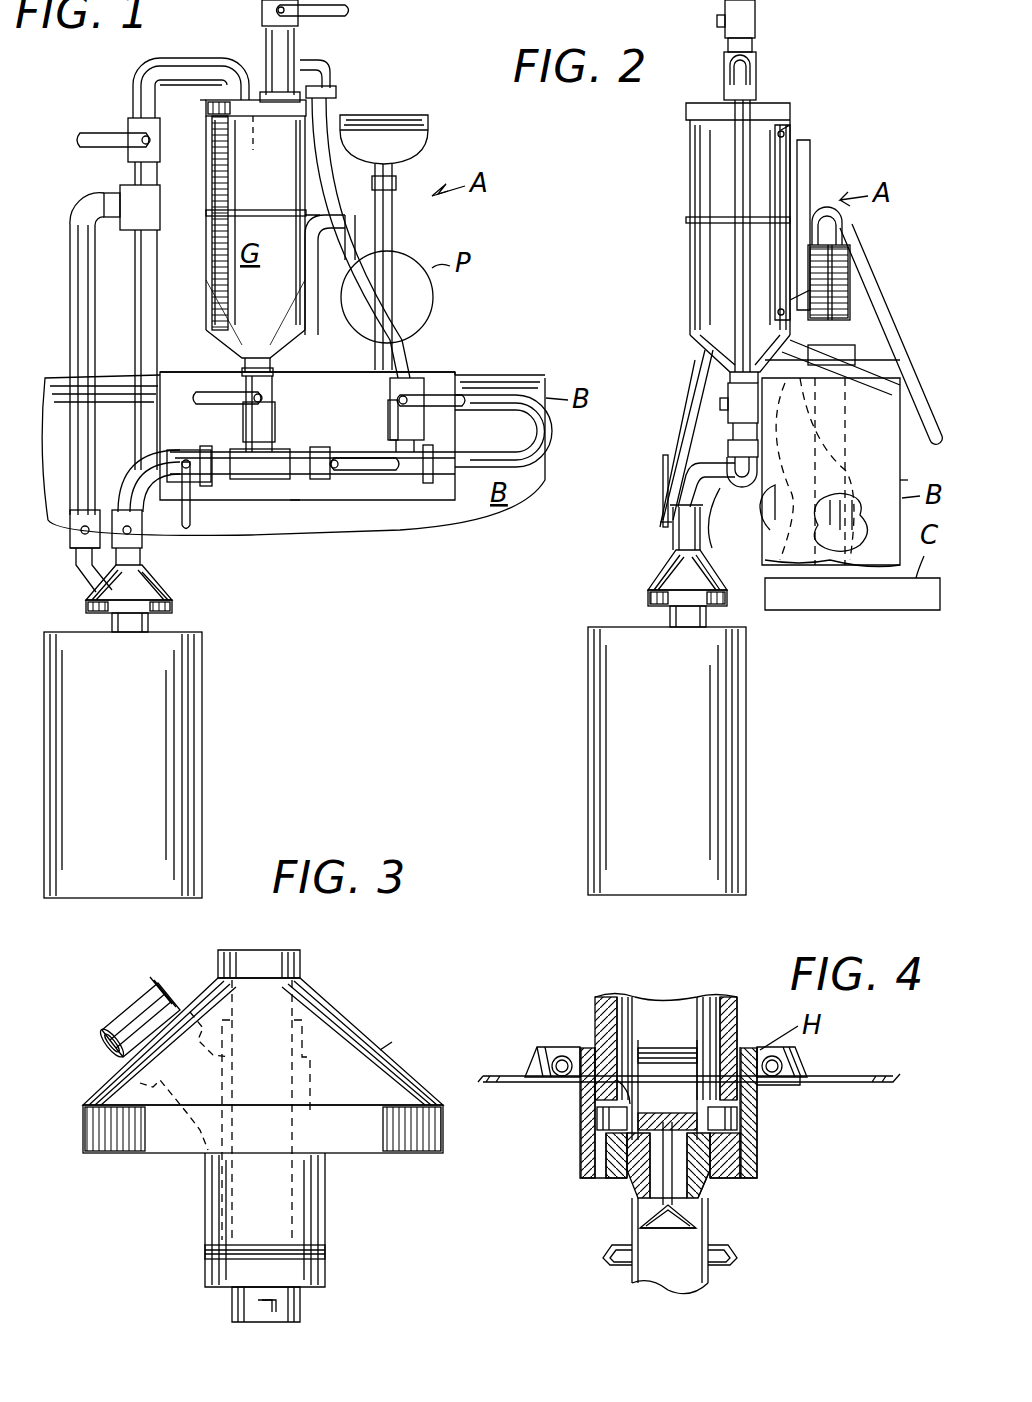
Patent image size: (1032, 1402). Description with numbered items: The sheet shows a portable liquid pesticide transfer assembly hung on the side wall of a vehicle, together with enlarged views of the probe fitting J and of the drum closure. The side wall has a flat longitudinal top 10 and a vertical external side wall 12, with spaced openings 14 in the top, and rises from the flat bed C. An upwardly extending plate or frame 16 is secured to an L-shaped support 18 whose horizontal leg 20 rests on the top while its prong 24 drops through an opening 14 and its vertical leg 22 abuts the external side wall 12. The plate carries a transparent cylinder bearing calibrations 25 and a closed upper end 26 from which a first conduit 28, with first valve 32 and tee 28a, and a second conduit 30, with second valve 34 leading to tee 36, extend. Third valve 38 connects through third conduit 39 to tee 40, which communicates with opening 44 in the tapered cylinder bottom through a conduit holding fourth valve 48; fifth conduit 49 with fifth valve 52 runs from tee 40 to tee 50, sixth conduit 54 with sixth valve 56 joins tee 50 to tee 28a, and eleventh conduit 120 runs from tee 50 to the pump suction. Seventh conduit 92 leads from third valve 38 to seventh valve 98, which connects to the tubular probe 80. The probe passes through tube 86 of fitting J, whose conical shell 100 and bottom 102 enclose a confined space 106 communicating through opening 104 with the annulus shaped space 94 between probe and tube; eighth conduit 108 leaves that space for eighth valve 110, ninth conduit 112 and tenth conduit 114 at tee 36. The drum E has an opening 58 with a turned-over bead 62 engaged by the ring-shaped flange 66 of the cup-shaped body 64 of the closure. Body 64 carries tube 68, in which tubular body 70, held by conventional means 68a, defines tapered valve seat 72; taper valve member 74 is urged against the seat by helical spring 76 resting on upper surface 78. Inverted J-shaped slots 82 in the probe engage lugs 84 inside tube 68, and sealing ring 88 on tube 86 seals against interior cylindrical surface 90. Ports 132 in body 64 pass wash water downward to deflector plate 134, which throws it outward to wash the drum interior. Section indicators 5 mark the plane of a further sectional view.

In FIG. 1, the section line 5 is at (192, 105).
In FIG. 1, the flat longitudinal top 10 is at (500, 374).
In FIG. 2, the flat longitudinal top 10 is at (880, 380).
In FIG. 2, the external side wall 12 is at (900, 472).
In FIG. 2, the openings 14 is at (846, 440).
In FIG. 1, the plate or frame 16 is at (307, 369).
In FIG. 2, the plate or frame 16 is at (810, 182).
In FIG. 1, the support 18 is at (465, 370).
In FIG. 2, the support 18 is at (870, 350).
In FIG. 2, the horizontal leg 20 is at (813, 469).
In FIG. 2, the vertical leg 22 is at (755, 492).
In FIG. 2, the prong 24 is at (840, 522).
In FIG. 1, the calibrations 25 is at (226, 182).
In FIG. 1, the closed upper end 26 is at (334, 92).
In FIG. 1, the first conduit 28 is at (296, 36).
In FIG. 1, the tee 28a is at (262, 66).
In FIG. 1, the second conduit 30 is at (188, 58).
In FIG. 1, the first valve 32 is at (330, 9).
In FIG. 2, the first valve 32 is at (756, 18).
In FIG. 1, the second valve 34 is at (160, 145).
In FIG. 1, the tee 36 is at (160, 208).
In FIG. 1, the third valve 38 is at (180, 448).
In FIG. 1, the third conduit 39 is at (216, 500).
In FIG. 1, the tee 40 is at (248, 478).
In FIG. 1, the opening 44 is at (276, 426).
In FIG. 1, the fourth valve 48 is at (276, 400).
In FIG. 1, the fifth conduit 49 is at (296, 500).
In FIG. 1, the tee 50 is at (416, 483).
In FIG. 1, the fifth valve 52 is at (326, 480).
In FIG. 1, the sixth conduit 54 is at (386, 184).
In FIG. 2, the sixth conduit 54 is at (752, 125).
In FIG. 1, the sixth valve 56 is at (385, 398).
In FIG. 4, the opening 58 is at (760, 1090).
In FIG. 4, the turned-over bead 62 is at (800, 1052).
In FIG. 4, the cup-shaped body 64 is at (760, 1172).
In FIG. 4, the ring-shaped flange 66 is at (810, 1066).
In FIG. 4, the tube 68 is at (632, 1218).
In FIG. 4, the conventional means 68a is at (706, 1190).
In FIG. 4, the tubular body 70 is at (635, 1192).
In FIG. 4, the tapered valve seat 72 is at (640, 1228).
In FIG. 4, the taper valve member 74 is at (696, 1226).
In FIG. 4, the compressed helical spring 76 is at (612, 1140).
In FIG. 4, the upper surface 78 is at (740, 1148).
In FIG. 1, the tubular probe 80 is at (142, 568).
In FIG. 2, the tubular probe 80 is at (670, 550).
In FIG. 3, the tubular probe 80 is at (302, 962).
In FIG. 4, the tubular probe 80 is at (700, 1000).
In FIG. 3, the inverted J-shaped slots 82 is at (262, 1322).
In FIG. 4, the inverted J-shaped slots 82 is at (648, 1080).
In FIG. 4, the lugs 84 is at (597, 1116).
In FIG. 2, the tube 86 is at (708, 612).
In FIG. 3, the tube 86 is at (327, 1222).
In FIG. 4, the tube 86 is at (737, 1008).
In FIG. 3, the sealing ring 88 is at (327, 1252).
In FIG. 4, the sealing ring 88 is at (738, 1040).
In FIG. 4, the interior cylindrical surface 90 is at (617, 1096).
In FIG. 1, the seventh conduit 92 is at (135, 450).
In FIG. 2, the seventh conduit 92 is at (716, 512).
In FIG. 3, the annulus shaped space 94 is at (300, 1200).
In FIG. 4, the annulus shaped space 94 is at (595, 1010).
In FIG. 1, the seventh valve 98 is at (145, 542).
In FIG. 3, the conical shell 100 is at (350, 1012).
In FIG. 3, the bottom 102 is at (136, 1160).
In FIG. 3, the opening 104 is at (228, 1152).
In FIG. 1, the confined space 106 is at (78, 575).
In FIG. 3, the confined space 106 is at (291, 1110).
In FIG. 3, the eighth conduit 108 is at (165, 986).
In FIG. 1, the eighth valve 110 is at (70, 548).
In FIG. 1, the ninth conduit 112 is at (70, 306).
In FIG. 1, the tenth conduit 114 is at (157, 304).
In FIG. 1, the eleventh conduit 120 is at (553, 452).
In FIG. 2, the eleventh conduit 120 is at (745, 500).
In FIG. 4, the ports 132 is at (630, 1175).
In FIG. 4, the deflector plate 134 is at (738, 1256).
In FIG. 2, the flat bed C is at (852, 585).
In FIG. 1, the drum or container E is at (202, 686).
In FIG. 2, the drum or container E is at (746, 686).
In FIG. 4, the drum or container E is at (874, 1076).
In FIG. 1, the fitting J is at (172, 588).
In FIG. 2, the fitting J is at (716, 574).
In FIG. 3, the fitting J is at (385, 1050).